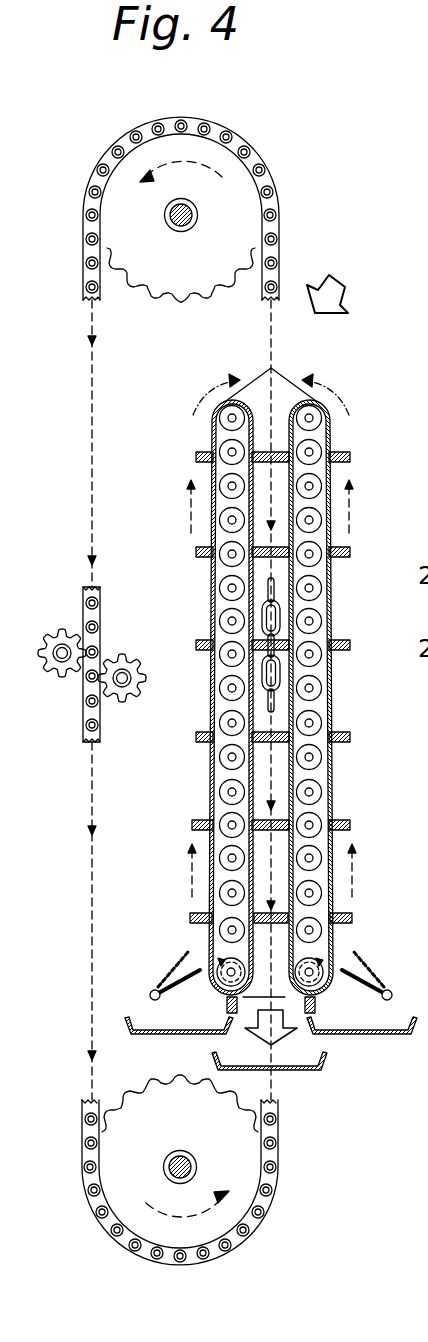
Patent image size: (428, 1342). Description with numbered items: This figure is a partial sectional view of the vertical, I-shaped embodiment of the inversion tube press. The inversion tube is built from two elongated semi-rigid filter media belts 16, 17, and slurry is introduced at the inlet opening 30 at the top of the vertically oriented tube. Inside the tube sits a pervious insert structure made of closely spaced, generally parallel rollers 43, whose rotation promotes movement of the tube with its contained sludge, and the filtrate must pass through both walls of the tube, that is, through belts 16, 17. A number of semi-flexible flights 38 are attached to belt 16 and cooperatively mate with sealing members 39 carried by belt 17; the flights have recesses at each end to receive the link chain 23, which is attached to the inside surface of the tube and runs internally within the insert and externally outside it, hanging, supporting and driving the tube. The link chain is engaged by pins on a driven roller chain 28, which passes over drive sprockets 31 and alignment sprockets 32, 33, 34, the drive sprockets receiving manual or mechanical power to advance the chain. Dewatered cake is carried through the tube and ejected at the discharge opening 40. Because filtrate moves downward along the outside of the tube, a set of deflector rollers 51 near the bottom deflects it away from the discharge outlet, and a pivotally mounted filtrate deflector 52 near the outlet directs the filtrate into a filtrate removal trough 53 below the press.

The filter media belt 16 is at (331, 770).
The filter media belt 17 is at (212, 773).
The link chain 23 is at (279, 667).
The roller chain 28 is at (84, 272).
The inlet opening 30 is at (290, 363).
The drive sprocket 31 is at (165, 294).
The alignment sprocket 32 is at (53, 623).
The alignment sprocket 33 is at (135, 703).
The alignment sprocket 34 is at (243, 1147).
The flight 38 is at (343, 820).
The sealing member 39 is at (203, 820).
The discharge opening 40 is at (293, 1035).
The roller 43 is at (220, 427).
The deflector roller 51 is at (331, 950).
The filtrate deflector 52 is at (190, 975).
The filtrate removal trough 53 is at (158, 1036).